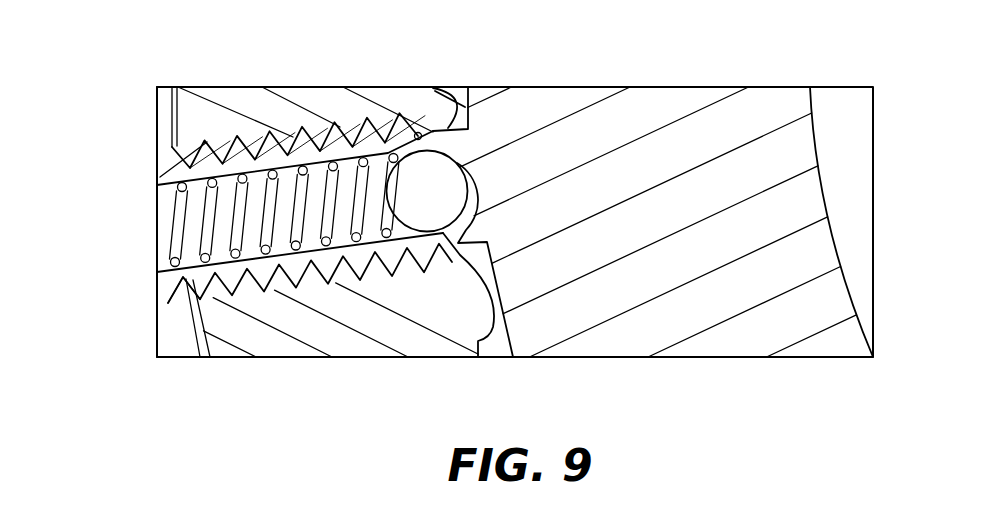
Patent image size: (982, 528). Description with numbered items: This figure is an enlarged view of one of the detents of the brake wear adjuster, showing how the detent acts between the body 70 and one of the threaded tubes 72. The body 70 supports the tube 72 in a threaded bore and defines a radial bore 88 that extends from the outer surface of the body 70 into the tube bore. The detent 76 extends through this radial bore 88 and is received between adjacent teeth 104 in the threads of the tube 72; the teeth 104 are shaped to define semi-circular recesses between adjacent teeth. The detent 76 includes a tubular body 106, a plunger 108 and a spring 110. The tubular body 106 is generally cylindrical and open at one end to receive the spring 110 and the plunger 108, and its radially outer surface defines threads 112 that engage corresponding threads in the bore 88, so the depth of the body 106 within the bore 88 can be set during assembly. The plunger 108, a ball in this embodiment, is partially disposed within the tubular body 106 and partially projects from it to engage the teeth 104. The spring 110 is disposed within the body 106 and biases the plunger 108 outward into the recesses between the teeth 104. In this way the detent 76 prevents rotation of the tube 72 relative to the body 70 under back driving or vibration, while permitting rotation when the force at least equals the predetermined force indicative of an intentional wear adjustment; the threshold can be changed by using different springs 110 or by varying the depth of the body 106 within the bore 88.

The body 70 is at (400, 334).
The tube 72 is at (560, 115).
The detent 76 is at (134, 255).
The bore 88 is at (207, 142).
The teeth 104 is at (480, 229).
The tubular body 106 is at (202, 271).
The plunger 108 is at (439, 176).
The spring 110 is at (328, 216).
The threads 112 is at (184, 278).